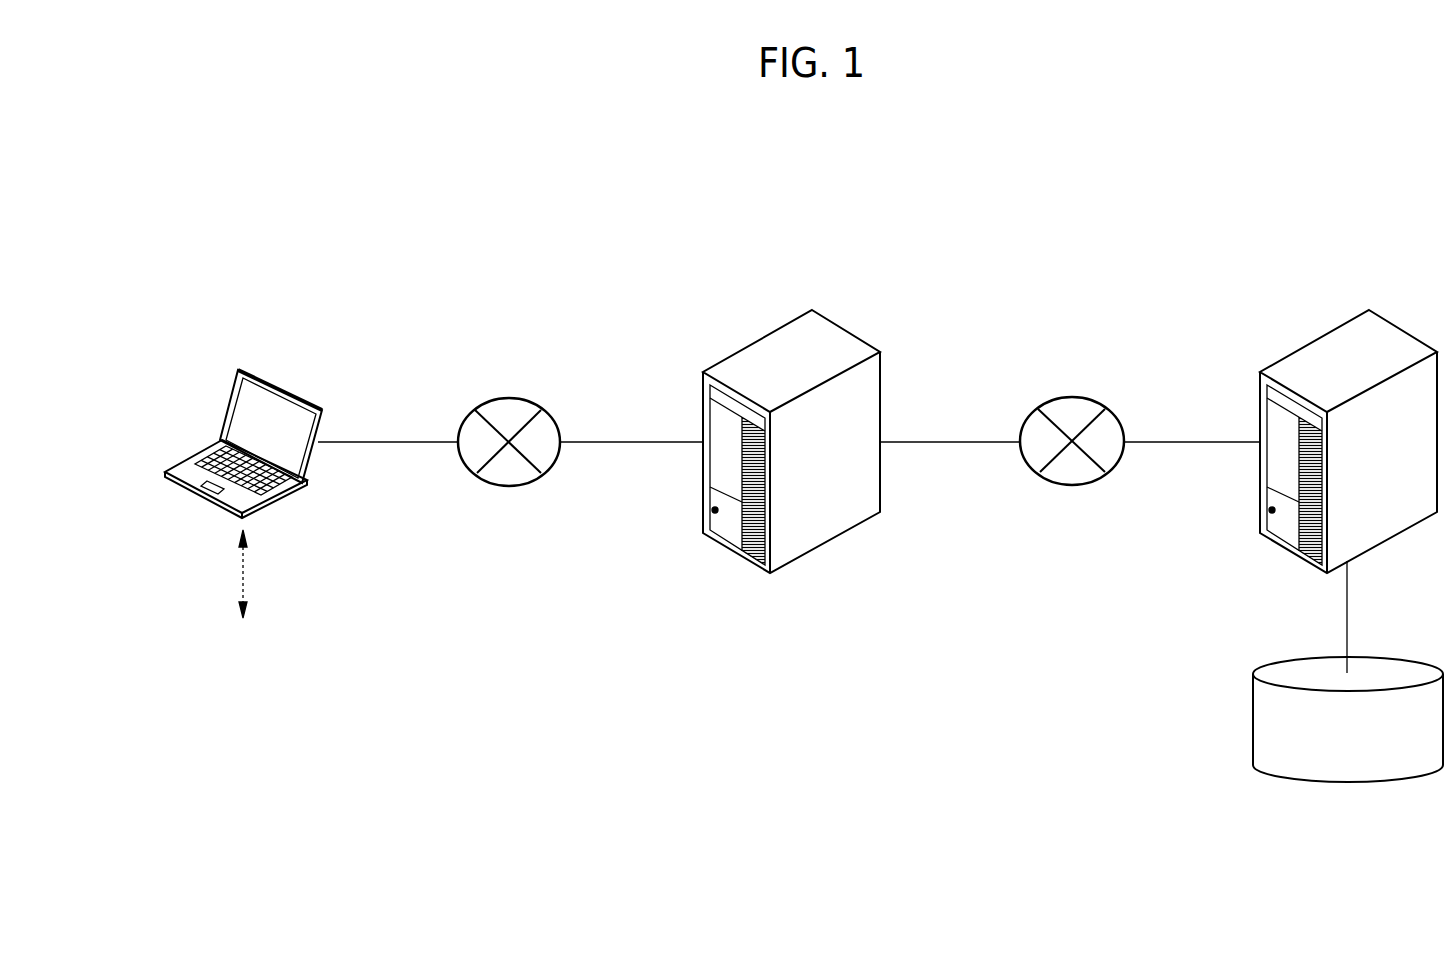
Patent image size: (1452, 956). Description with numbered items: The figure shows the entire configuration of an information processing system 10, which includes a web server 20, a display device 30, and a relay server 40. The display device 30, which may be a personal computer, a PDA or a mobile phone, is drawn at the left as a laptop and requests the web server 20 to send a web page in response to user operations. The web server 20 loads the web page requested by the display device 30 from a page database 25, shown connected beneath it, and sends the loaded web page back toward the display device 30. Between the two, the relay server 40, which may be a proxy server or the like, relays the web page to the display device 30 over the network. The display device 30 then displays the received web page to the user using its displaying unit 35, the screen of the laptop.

The information processing system 10 is at (1275, 170).
The web server 20 is at (1404, 327).
The page database 25 is at (1348, 783).
The display device 30 is at (182, 404).
The displaying unit 35 is at (283, 392).
The relay server 40 is at (847, 327).